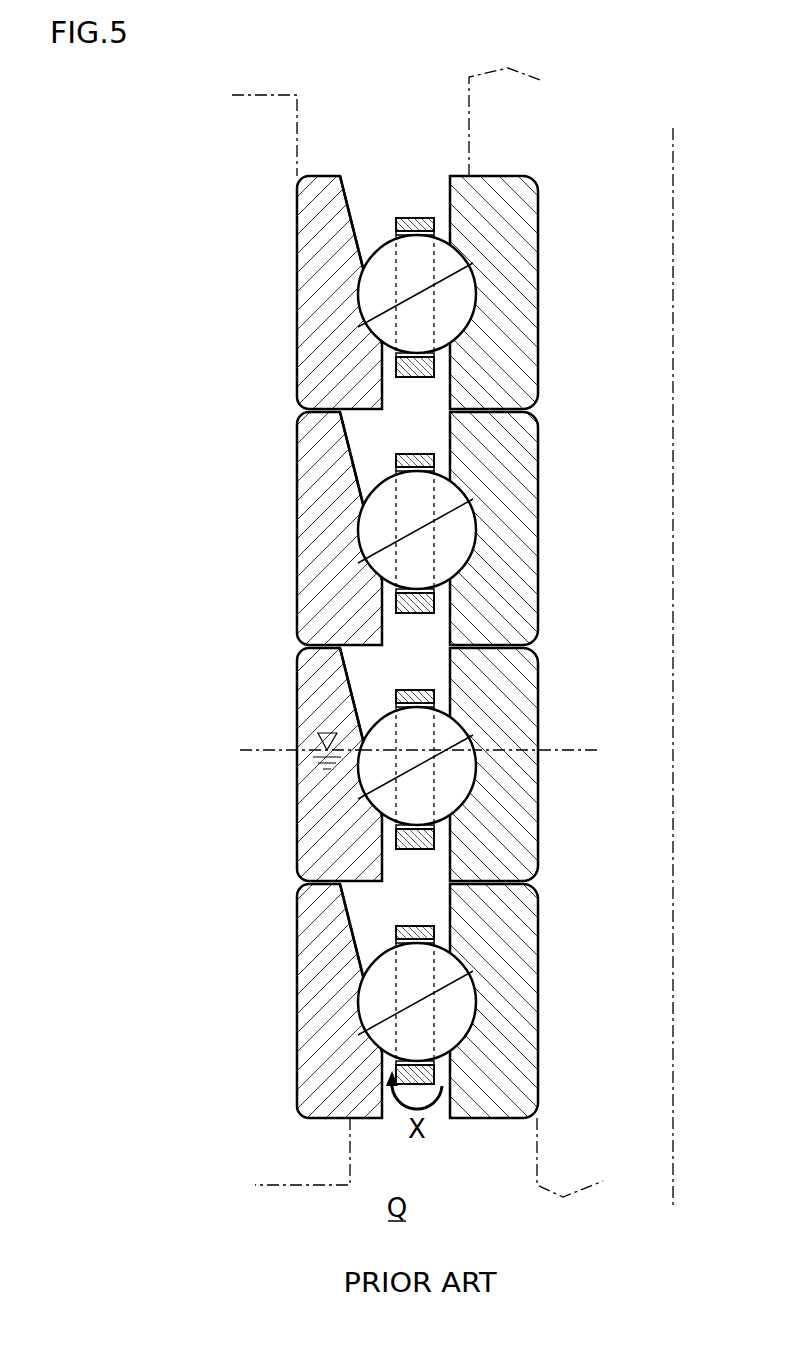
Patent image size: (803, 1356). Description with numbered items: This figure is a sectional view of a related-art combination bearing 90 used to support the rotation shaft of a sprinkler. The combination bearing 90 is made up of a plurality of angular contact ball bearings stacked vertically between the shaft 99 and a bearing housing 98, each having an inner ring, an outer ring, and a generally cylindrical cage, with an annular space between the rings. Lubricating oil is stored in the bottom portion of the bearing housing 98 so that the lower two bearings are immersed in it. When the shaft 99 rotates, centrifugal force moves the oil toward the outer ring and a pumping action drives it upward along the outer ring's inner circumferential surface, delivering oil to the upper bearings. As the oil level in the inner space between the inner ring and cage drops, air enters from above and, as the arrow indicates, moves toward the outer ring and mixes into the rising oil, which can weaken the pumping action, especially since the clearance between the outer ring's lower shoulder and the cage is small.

The combination bearing 90 is at (284, 1119).
The bearing housing 98 is at (297, 145).
The shaft 99 is at (469, 143).
The rotation axis C is at (673, 145).